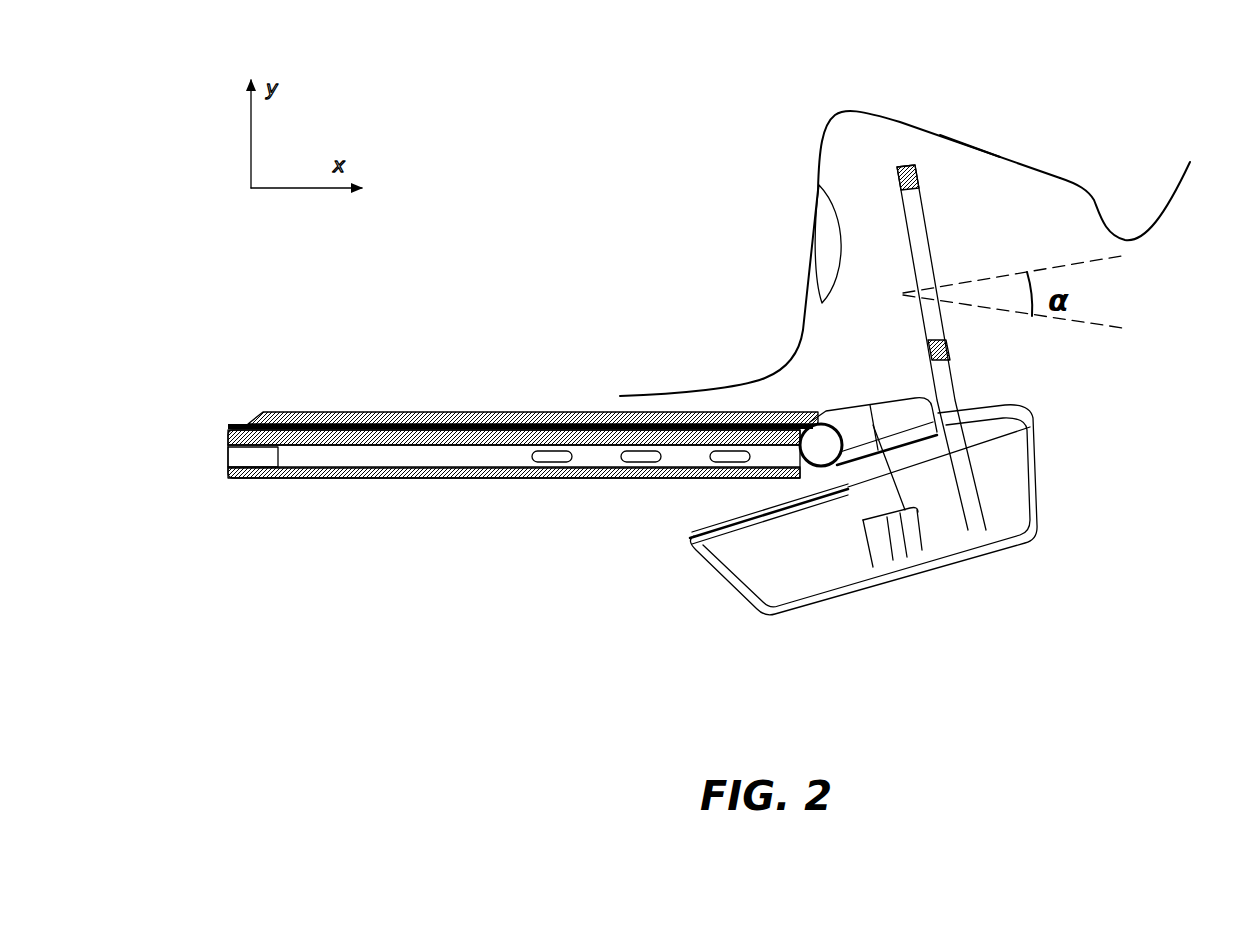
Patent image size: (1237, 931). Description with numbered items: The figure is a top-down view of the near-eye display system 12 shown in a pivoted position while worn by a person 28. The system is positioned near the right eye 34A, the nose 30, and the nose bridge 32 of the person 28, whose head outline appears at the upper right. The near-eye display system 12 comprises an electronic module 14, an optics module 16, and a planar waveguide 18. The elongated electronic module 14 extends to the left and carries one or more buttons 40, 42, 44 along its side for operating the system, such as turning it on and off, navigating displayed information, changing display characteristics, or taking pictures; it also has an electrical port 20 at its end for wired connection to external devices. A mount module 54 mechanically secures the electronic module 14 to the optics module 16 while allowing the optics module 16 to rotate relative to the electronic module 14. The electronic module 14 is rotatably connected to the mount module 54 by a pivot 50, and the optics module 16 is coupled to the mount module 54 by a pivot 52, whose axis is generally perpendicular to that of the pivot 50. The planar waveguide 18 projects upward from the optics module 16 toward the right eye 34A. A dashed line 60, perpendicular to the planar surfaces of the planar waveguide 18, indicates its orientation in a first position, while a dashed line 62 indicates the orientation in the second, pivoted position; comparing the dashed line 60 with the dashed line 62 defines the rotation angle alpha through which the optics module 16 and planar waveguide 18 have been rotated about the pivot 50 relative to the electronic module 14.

The near-eye display system 12 is at (479, 635).
The electronic module 14 is at (291, 398).
The optics module 16 is at (1022, 562).
The planar waveguide 18 is at (934, 273).
The electrical port 20 is at (226, 455).
The person 28 is at (560, 136).
The nose 30 is at (1172, 237).
The nose bridge 32 is at (983, 128).
The right eye 34A is at (852, 267).
The button 40 is at (549, 464).
The button 42 is at (637, 464).
The button 44 is at (726, 464).
The pivot 50 is at (822, 426).
The pivot 52 is at (903, 483).
The mount module 54 is at (865, 400).
The dashed line 60 is at (1082, 322).
The dashed line 62 is at (1098, 262).